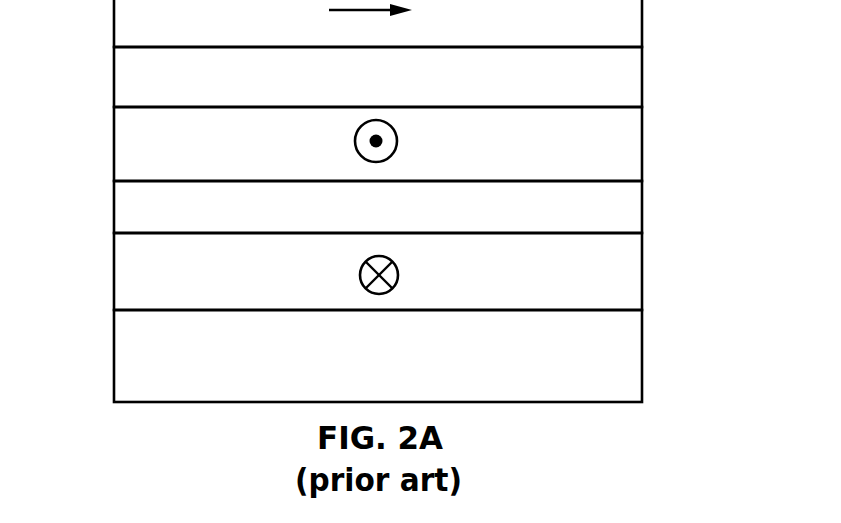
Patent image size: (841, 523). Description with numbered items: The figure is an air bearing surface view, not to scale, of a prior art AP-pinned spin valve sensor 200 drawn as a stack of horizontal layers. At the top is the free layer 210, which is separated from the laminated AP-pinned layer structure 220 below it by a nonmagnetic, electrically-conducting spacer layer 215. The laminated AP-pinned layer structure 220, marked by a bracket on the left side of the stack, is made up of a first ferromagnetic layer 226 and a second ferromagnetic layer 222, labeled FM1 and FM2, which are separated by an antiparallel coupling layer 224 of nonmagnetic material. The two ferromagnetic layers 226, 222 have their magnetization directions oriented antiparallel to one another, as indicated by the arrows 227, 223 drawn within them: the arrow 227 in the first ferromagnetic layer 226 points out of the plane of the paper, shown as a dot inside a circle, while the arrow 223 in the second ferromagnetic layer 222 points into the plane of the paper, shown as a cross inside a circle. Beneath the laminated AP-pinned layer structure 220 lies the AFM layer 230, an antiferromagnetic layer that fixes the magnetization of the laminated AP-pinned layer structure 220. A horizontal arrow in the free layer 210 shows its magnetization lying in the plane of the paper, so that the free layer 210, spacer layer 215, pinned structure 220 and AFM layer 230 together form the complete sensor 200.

The AP-pinned SV sensor 200 is at (421, 251).
The free layer 210 is at (627, 24).
The spacer layer 215 is at (627, 83).
The laminated AP-pinned layer structure 220 is at (387, 211).
The second ferromagnetic layer 222 is at (427, 271).
The arrow 223 is at (398, 277).
The antiparallel coupling layer 224 is at (625, 214).
The first ferromagnetic layer 226 is at (429, 144).
The arrow 227 is at (397, 141).
The AFM layer 230 is at (625, 354).